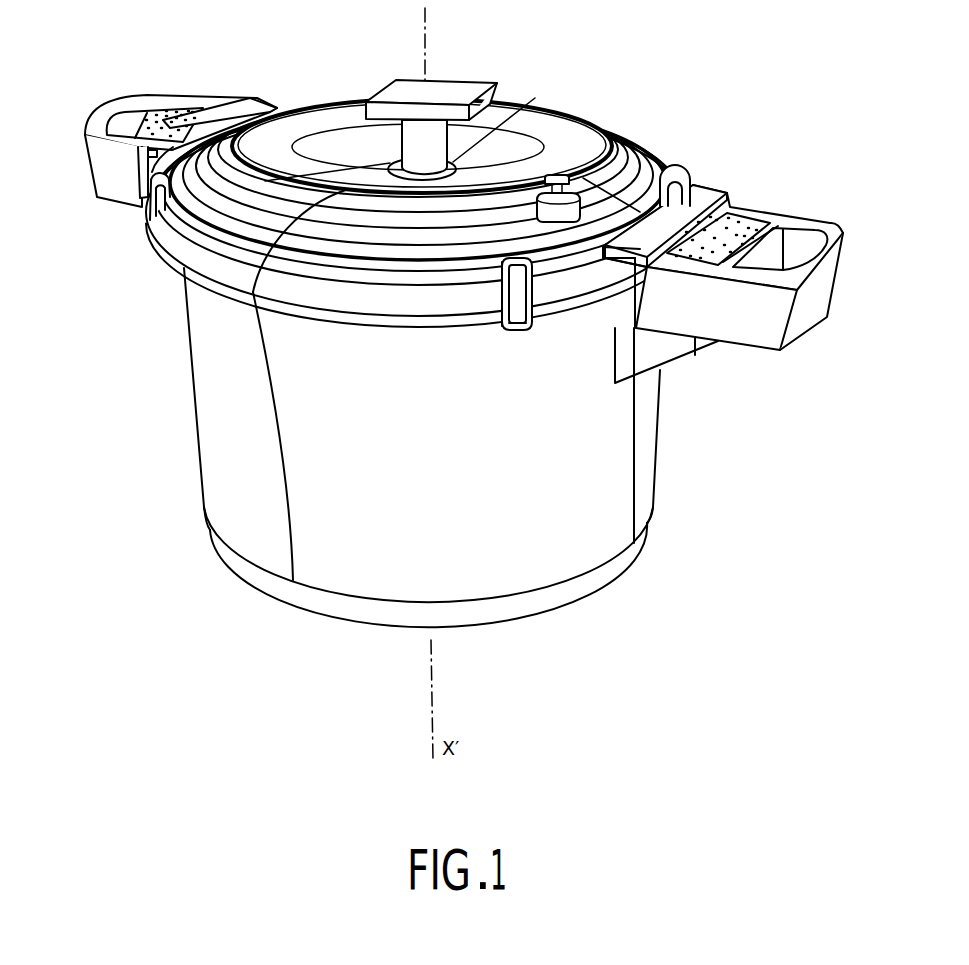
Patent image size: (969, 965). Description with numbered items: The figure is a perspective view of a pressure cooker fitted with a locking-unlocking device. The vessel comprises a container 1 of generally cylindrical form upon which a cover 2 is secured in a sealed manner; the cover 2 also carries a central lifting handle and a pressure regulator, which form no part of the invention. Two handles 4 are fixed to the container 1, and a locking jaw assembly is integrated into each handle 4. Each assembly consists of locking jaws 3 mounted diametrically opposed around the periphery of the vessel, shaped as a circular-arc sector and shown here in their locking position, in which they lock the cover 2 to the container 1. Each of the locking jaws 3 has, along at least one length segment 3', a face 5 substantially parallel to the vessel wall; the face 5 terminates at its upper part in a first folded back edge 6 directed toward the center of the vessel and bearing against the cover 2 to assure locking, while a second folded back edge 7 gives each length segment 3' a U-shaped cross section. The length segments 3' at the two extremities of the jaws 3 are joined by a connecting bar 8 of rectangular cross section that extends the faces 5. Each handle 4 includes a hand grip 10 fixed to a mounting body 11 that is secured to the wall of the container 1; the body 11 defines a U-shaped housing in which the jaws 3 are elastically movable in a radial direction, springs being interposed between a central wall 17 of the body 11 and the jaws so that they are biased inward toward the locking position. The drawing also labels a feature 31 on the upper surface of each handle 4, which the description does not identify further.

The container 1 is at (217, 458).
The cover 2 is at (585, 142).
The locking jaws 3 is at (401, 191).
The length segment 3' is at (673, 146).
The handle 4 is at (469, 210).
The face 5 is at (533, 303).
The first folded back edge 6 is at (506, 266).
The second folded back edge 7 is at (512, 327).
The connecting bar 8 is at (608, 282).
The hand grip 10 is at (800, 316).
The mounting body 11 is at (253, 100).
The central wall 17 is at (725, 205).
The grip inlay 31 is at (175, 107).